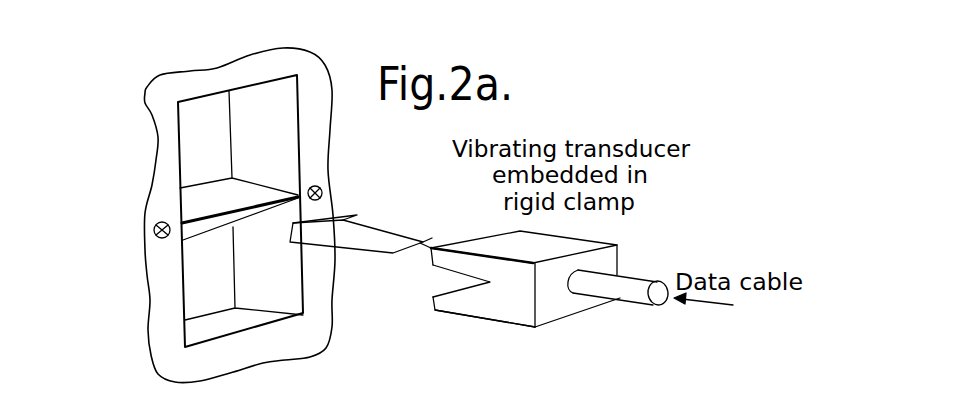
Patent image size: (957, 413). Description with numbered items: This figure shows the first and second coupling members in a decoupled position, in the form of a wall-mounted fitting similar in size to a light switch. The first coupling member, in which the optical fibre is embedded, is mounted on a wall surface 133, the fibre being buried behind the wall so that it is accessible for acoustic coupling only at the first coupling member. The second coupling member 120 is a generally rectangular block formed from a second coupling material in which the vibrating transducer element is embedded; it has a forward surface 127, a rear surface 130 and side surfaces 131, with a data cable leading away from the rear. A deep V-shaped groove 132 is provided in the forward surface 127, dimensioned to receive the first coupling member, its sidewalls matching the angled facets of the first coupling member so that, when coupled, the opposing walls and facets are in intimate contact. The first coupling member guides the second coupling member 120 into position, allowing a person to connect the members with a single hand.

The second coupling member 120 is at (621, 254).
The forward surface 127 is at (423, 242).
The rear surface 130 is at (560, 327).
The side surfaces 131 is at (497, 327).
The V-shaped groove 132 is at (435, 272).
The wall surface 133 is at (208, 127).